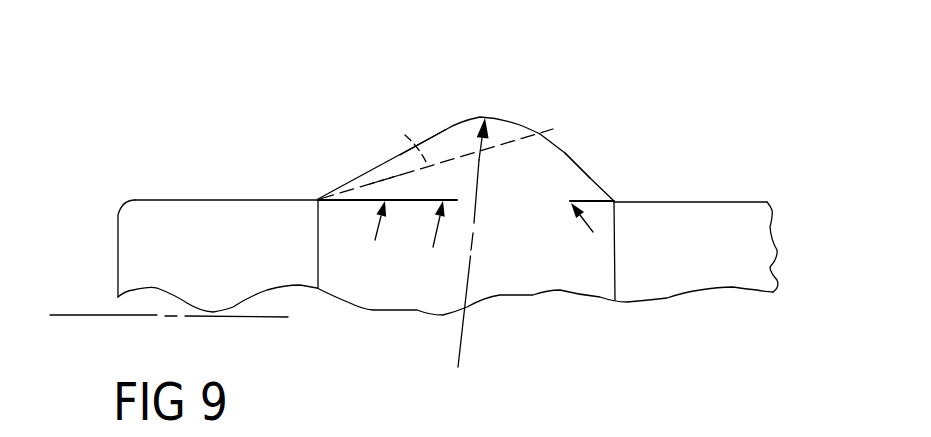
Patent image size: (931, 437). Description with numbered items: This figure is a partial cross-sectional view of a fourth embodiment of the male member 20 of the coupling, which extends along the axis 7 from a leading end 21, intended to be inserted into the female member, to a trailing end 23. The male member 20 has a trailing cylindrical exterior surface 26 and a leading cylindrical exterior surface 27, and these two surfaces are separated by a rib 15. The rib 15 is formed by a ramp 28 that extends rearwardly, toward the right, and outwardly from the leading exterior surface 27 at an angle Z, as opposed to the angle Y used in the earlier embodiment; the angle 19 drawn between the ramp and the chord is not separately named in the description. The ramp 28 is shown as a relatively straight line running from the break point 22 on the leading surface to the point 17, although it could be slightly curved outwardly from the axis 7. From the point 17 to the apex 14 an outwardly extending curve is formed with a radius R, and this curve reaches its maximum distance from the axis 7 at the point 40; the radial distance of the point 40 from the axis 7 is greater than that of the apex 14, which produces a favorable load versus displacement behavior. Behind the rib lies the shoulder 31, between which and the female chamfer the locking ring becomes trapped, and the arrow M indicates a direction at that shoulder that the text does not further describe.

The axis 7 is at (140, 316).
The apex 14 is at (533, 136).
The rib 15 is at (277, 69).
The point 17 is at (437, 126).
The angle between ramp and chord 19 is at (405, 135).
The male member 20 is at (787, 70).
The leading end 21 is at (118, 217).
The break point 22 is at (318, 199).
The trailing end 23 is at (796, 256).
The trailing cylindrical exterior surface 26 is at (712, 202).
The leading cylindrical exterior surface 27 is at (198, 200).
The ramp 28 is at (343, 183).
The shoulder 31 is at (577, 167).
The point 40 is at (485, 118).
The force direction M is at (597, 168).
The radius R is at (529, 361).
The angle Y is at (375, 166).
The angle Z is at (410, 124).